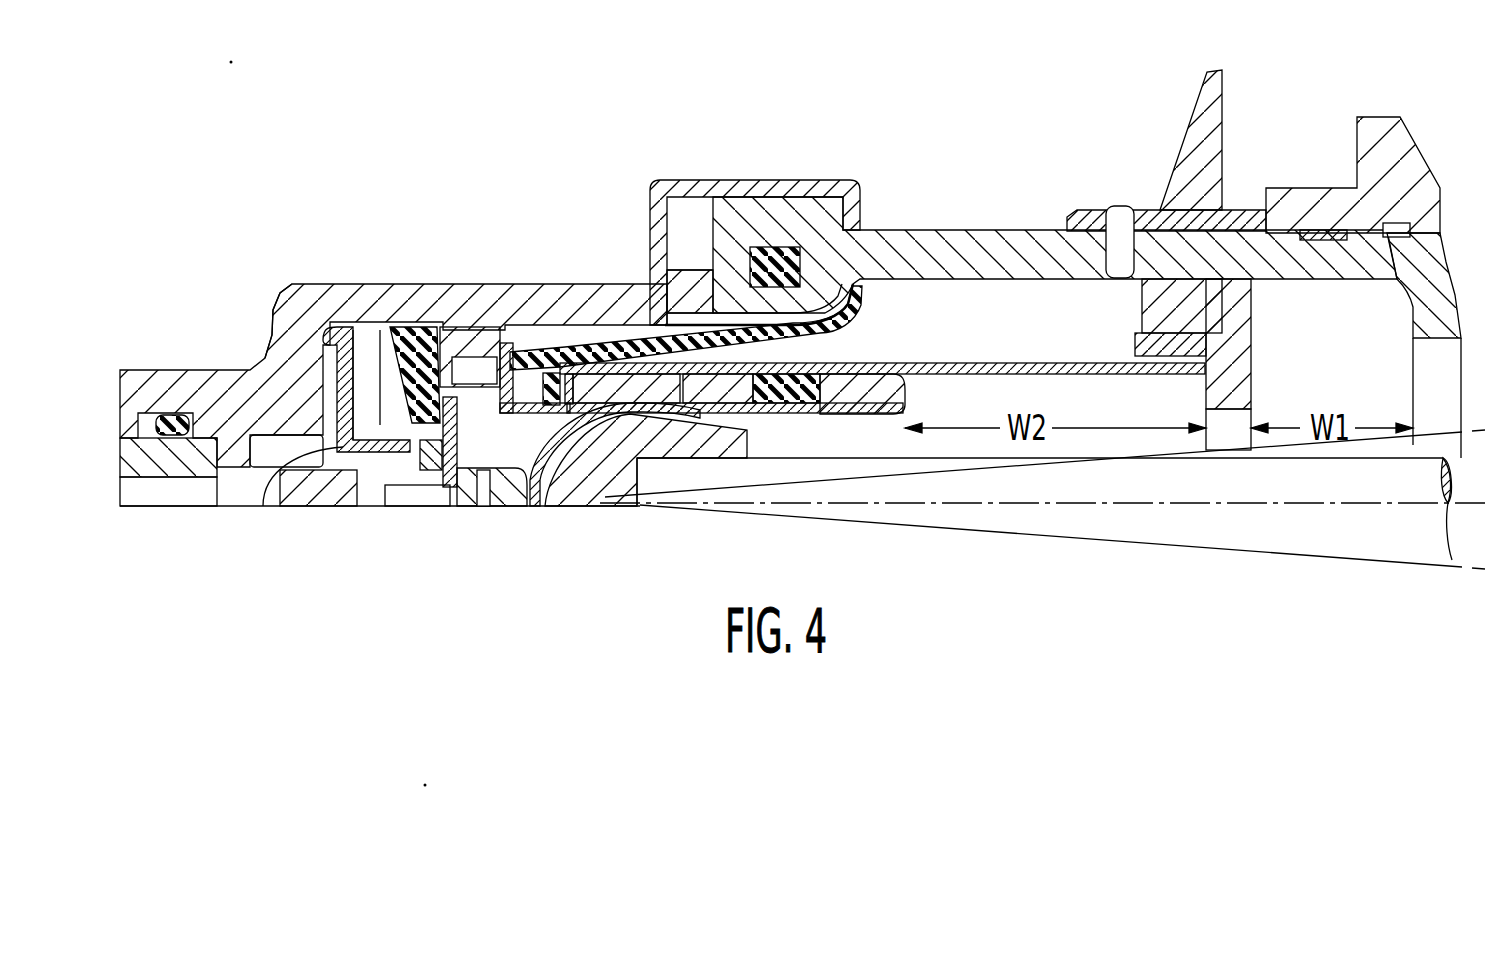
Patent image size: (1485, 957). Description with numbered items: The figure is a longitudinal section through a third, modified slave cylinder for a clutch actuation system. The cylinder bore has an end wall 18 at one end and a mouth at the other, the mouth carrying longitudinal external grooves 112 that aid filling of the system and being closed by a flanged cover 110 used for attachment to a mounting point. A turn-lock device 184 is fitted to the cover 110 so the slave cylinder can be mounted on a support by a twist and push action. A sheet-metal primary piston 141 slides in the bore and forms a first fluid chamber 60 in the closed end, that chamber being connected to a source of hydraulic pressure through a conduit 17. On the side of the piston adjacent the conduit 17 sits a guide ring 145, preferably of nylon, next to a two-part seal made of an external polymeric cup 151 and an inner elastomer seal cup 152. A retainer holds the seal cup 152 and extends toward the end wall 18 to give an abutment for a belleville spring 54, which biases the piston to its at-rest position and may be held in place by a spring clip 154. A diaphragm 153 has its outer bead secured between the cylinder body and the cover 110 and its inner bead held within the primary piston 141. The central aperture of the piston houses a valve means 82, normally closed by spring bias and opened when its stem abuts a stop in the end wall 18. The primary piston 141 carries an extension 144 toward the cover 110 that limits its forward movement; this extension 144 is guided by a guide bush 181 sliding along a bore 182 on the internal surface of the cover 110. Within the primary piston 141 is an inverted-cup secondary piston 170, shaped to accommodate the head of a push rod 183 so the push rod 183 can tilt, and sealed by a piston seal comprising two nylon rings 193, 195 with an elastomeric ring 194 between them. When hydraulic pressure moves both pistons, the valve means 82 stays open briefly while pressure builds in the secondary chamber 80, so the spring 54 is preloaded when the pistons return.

The conduit 17 is at (162, 490).
The end wall 18 is at (271, 347).
The belleville spring 54 is at (263, 506).
The first fluid chamber 60 is at (352, 467).
The secondary chamber 80 is at (493, 447).
The valve means 82 is at (417, 500).
The flanged cover 110 is at (1427, 290).
The longitudinal external grooves 112 is at (708, 318).
The primary piston 141 is at (540, 440).
The extension 144 is at (1033, 360).
The guide ring 145 is at (467, 337).
The external polymeric cup 151 is at (412, 375).
The inner elastomer seal cup 152 is at (403, 427).
The diaphragm 153 is at (362, 377).
The spring clip 154 is at (284, 291).
The secondary piston 170 is at (777, 395).
The guide bush 181 is at (1165, 315).
The bore 182 is at (1307, 281).
The push rod 183 is at (1233, 498).
The turn-lock device 184 is at (1210, 116).
The nylon ring 193 is at (707, 393).
The elastomeric ring 194 is at (800, 393).
The nylon ring 195 is at (870, 400).